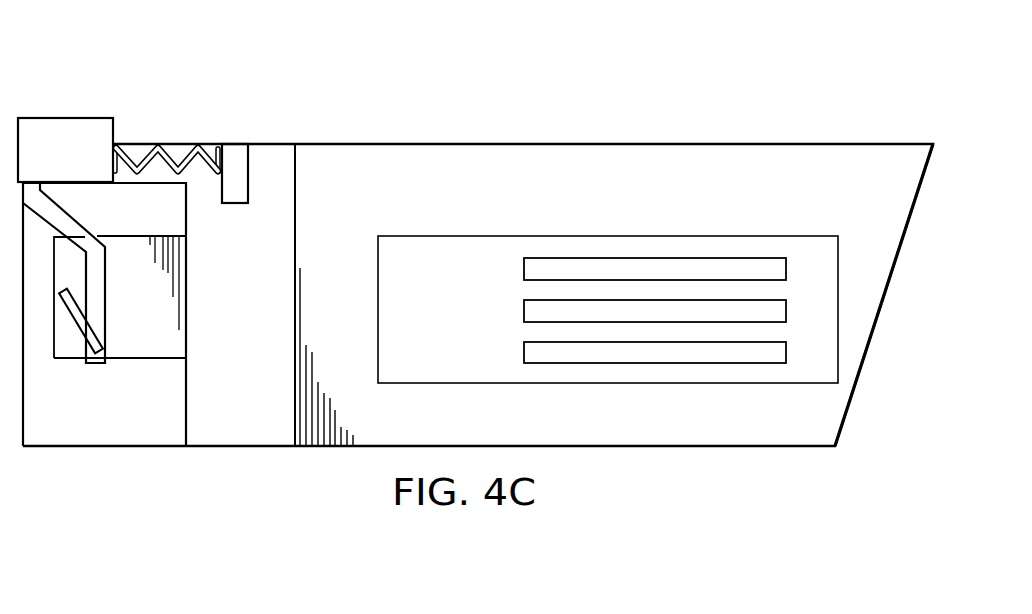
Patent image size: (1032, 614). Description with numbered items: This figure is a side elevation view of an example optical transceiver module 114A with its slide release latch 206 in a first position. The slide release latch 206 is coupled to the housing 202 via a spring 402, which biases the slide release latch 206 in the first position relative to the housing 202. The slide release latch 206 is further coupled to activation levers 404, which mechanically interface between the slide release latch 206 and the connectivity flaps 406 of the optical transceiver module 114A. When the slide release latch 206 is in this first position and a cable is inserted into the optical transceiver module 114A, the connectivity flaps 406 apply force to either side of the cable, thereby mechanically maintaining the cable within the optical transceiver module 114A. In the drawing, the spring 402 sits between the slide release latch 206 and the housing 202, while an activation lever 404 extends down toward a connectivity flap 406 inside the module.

The optical transceiver module 114A is at (655, 66).
The slide release latch 206 is at (65, 117).
The housing 202 is at (267, 144).
The spring 402 is at (190, 146).
The activation levers 404 is at (67, 207).
The connectivity flaps 406 is at (135, 360).